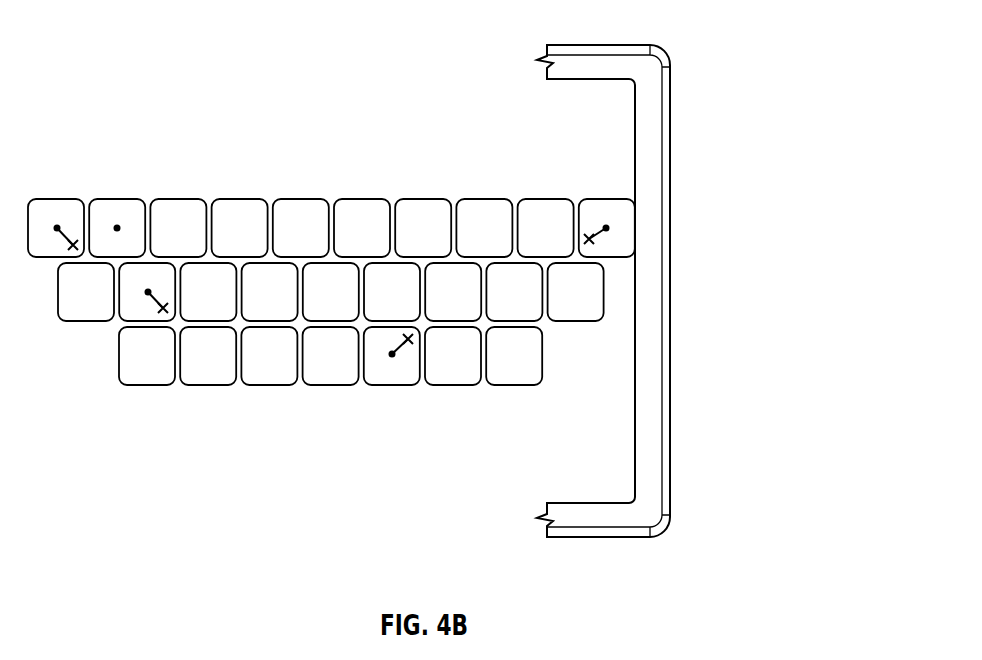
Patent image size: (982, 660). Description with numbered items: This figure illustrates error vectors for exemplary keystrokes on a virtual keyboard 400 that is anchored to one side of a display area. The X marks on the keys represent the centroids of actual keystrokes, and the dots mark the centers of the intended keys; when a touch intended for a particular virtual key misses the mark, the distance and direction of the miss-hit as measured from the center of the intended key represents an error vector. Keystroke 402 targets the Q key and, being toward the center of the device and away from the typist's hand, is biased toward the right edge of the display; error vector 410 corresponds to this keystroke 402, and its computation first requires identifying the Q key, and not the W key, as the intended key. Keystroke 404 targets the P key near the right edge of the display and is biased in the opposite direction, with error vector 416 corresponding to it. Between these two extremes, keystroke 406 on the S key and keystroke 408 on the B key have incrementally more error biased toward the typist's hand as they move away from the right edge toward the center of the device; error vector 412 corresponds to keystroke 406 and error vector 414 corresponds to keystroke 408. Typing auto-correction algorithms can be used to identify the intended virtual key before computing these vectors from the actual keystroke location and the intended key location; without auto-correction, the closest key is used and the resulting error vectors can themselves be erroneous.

The virtual keyboard 400 is at (331, 264).
The keystroke 402 is at (74, 244).
The keystroke 404 is at (591, 242).
The keystroke 406 is at (162, 311).
The keystroke 408 is at (409, 342).
The error vector 410 is at (71, 243).
The error vector 412 is at (146, 293).
The error vector 414 is at (393, 357).
The error vector 416 is at (608, 230).